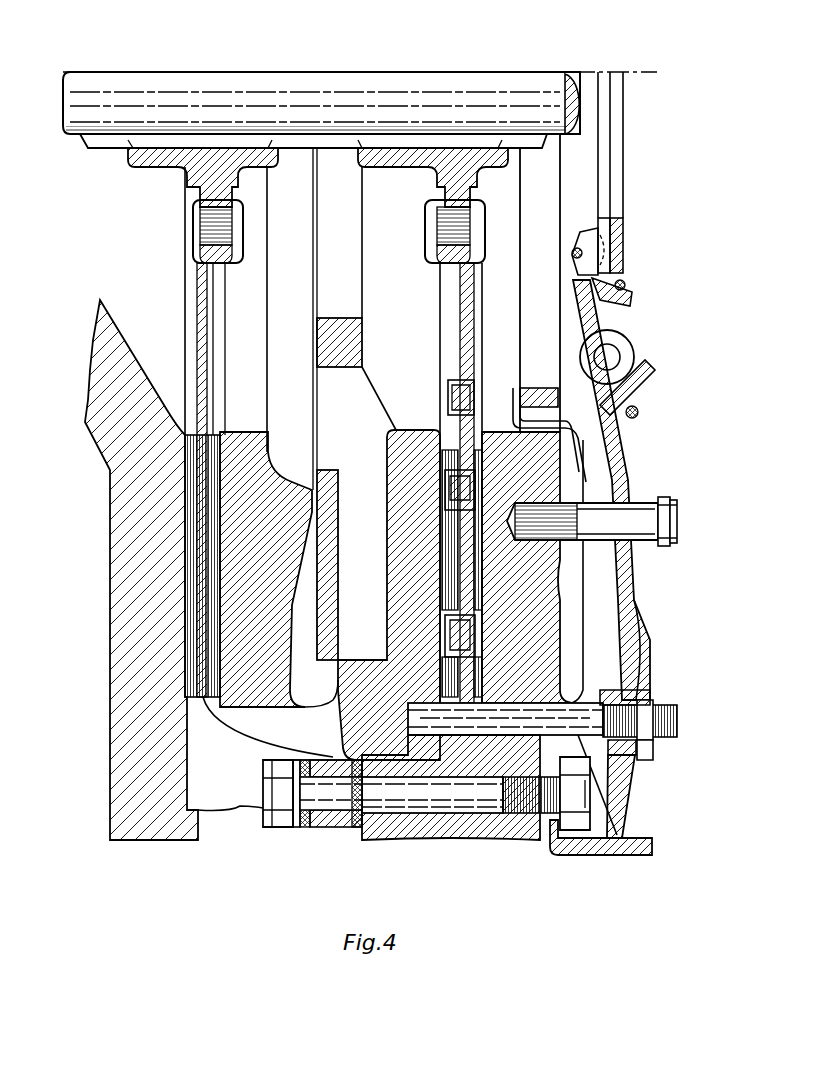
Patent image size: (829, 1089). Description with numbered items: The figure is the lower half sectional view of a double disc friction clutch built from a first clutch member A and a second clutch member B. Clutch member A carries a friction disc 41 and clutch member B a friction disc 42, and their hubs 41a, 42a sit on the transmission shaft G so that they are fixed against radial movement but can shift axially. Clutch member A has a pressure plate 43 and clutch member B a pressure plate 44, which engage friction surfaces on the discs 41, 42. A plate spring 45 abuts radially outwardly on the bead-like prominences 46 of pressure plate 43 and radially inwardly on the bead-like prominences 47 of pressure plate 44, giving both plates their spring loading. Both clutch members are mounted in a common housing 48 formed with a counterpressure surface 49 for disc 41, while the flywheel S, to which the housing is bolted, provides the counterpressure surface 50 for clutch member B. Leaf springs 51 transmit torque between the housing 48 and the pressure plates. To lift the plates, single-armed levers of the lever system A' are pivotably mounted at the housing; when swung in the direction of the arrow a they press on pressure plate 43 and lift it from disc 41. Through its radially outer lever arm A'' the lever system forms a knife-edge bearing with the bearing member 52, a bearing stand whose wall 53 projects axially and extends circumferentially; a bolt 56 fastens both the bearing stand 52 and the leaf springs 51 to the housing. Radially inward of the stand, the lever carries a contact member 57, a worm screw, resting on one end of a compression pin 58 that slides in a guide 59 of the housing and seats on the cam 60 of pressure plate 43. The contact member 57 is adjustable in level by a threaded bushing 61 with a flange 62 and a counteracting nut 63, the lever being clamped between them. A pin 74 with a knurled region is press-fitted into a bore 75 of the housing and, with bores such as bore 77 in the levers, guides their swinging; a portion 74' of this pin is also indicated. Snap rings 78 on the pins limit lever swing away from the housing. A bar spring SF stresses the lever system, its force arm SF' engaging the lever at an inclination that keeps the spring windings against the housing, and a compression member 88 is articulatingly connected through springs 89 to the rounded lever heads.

The transmission shaft G is at (530, 84).
The flywheel S is at (112, 338).
The arrow a is at (548, 204).
The hub 42a is at (241, 160).
The hub 41a is at (450, 160).
The friction disc 42 is at (193, 521).
The friction disc 41 is at (470, 583).
The pressure plate 43 is at (398, 529).
The pressure plate 44 is at (248, 430).
The plate spring 45 is at (326, 607).
The bead-like prominences 46 is at (345, 660).
The bead-like prominences 47 is at (333, 470).
The housing 48 is at (540, 641).
The counterpressure surface 49 is at (480, 453).
The counterpressure surface 50 is at (187, 613).
The leaf springs 51 is at (355, 831).
The bearing member 52 is at (590, 882).
The wall 53 is at (605, 842).
The bolt 56 is at (470, 801).
The contact member 57 is at (678, 722).
The compression pin 58 is at (548, 731).
The guide 59 is at (522, 736).
The cam 60 is at (458, 704).
The threaded bushing 61 is at (646, 700).
The flange 62 is at (625, 753).
The counteracting nut 63 is at (648, 751).
The pin 74 is at (630, 490).
The lever arm portion 74' is at (603, 543).
The bore 75 is at (600, 490).
The bore 77 is at (632, 503).
The snap ring 78 is at (672, 521).
The compression member 88 is at (625, 240).
The springs 89 is at (622, 348).
The first clutch member A is at (443, 789).
The lever system A' is at (667, 468).
The radially outer lever arm A'' is at (646, 804).
The second clutch member B is at (200, 706).
The bar spring SF is at (642, 737).
The force arm SF' is at (605, 408).